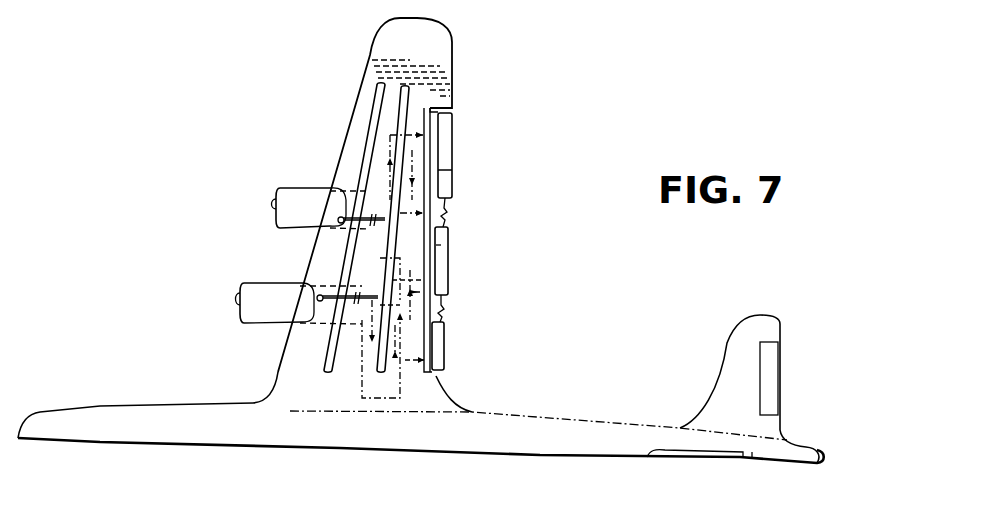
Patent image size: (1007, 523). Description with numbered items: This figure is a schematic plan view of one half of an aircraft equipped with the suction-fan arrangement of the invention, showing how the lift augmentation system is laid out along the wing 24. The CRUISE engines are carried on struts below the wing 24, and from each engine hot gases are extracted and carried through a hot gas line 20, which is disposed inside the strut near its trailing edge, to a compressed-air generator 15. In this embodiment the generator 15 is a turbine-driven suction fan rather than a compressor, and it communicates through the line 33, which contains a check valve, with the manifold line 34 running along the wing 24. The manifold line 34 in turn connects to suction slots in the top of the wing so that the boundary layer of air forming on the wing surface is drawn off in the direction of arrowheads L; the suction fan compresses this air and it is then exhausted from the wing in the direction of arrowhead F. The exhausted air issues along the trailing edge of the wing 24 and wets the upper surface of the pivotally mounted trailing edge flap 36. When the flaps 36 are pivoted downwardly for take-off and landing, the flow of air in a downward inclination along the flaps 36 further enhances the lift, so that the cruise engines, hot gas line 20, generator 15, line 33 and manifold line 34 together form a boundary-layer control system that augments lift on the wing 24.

The wing 24 is at (432, 57).
The manifold line 34 is at (403, 95).
The trailing edge flap 36 is at (452, 148).
The line 33 is at (452, 172).
The compressed-air generator 15 is at (448, 212).
The hot gas line 20 is at (378, 224).
The boundary layer suction direction L is at (400, 108).
The exhaust air direction F is at (455, 126).
The cruise engines CRUISE is at (277, 192).